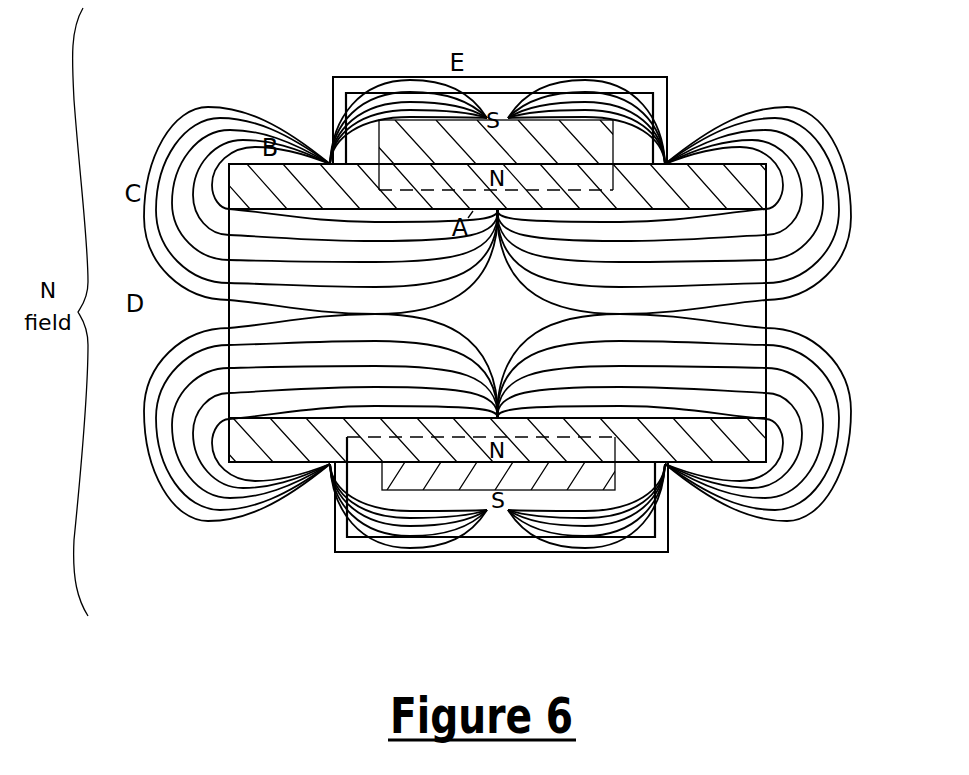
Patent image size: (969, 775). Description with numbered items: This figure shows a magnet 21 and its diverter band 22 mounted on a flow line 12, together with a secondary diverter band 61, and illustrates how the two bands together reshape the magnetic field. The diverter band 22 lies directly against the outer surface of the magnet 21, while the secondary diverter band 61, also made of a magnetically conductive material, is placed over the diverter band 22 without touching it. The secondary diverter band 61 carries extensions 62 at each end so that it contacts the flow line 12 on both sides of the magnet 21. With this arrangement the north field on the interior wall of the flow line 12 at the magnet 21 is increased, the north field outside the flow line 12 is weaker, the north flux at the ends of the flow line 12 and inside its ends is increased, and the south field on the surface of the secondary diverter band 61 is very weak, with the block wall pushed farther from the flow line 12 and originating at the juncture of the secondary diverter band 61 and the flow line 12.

The flow line 12 is at (713, 176).
The magnet 21 is at (483, 108).
The diverter band 22 is at (577, 132).
The secondary diverter band 61 is at (656, 78).
The extensions 62 is at (320, 117).